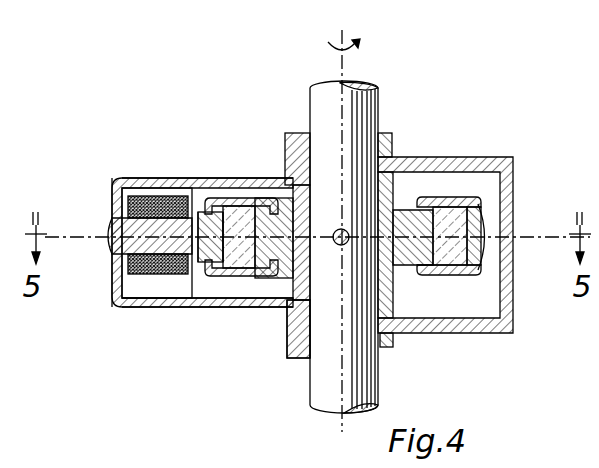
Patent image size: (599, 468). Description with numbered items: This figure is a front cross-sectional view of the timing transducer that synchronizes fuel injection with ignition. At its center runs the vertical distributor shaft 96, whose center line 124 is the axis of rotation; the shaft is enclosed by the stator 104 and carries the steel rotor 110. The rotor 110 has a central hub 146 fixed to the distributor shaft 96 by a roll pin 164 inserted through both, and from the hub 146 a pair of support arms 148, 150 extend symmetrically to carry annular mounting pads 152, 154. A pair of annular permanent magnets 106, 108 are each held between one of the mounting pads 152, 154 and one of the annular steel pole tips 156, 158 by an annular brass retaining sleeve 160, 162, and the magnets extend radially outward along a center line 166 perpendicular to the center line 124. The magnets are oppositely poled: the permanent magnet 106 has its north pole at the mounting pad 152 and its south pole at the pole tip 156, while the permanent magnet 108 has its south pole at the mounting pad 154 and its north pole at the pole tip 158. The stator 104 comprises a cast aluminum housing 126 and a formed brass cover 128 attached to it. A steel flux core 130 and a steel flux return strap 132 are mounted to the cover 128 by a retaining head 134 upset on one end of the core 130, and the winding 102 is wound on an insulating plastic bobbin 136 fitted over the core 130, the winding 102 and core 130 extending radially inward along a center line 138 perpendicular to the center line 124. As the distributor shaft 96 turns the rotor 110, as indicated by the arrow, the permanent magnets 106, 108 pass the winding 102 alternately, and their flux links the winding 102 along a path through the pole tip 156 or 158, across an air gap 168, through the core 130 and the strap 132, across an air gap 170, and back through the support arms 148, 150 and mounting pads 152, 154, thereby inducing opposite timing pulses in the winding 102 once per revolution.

The distributor shaft 96 is at (350, 127).
The winding 102 is at (124, 222).
The stator 104 is at (286, 338).
The permanent magnet 106 is at (450, 216).
The permanent magnet 108 is at (219, 272).
The rotor 110 is at (436, 190).
The center line 124 is at (349, 60).
The housing 126 is at (392, 158).
The cover 128 is at (118, 182).
The flux core 130 is at (118, 266).
The flux return strap 132 is at (166, 183).
The retaining head 134 is at (128, 250).
The bobbin 136 is at (200, 307).
The center line 138 is at (110, 232).
The central hub 146 is at (292, 302).
The support arm 148 is at (400, 256).
The support arm 150 is at (257, 252).
The mounting pad 152 is at (430, 272).
The mounting pad 154 is at (252, 204).
The pole tip 156 is at (483, 237).
The pole tip 158 is at (190, 272).
The retaining sleeve 160 is at (482, 206).
The retaining sleeve 162 is at (218, 212).
The roll pin 164 is at (338, 230).
The center line 166 is at (524, 242).
The air gap 168 is at (197, 272).
The air gap 170 is at (275, 212).